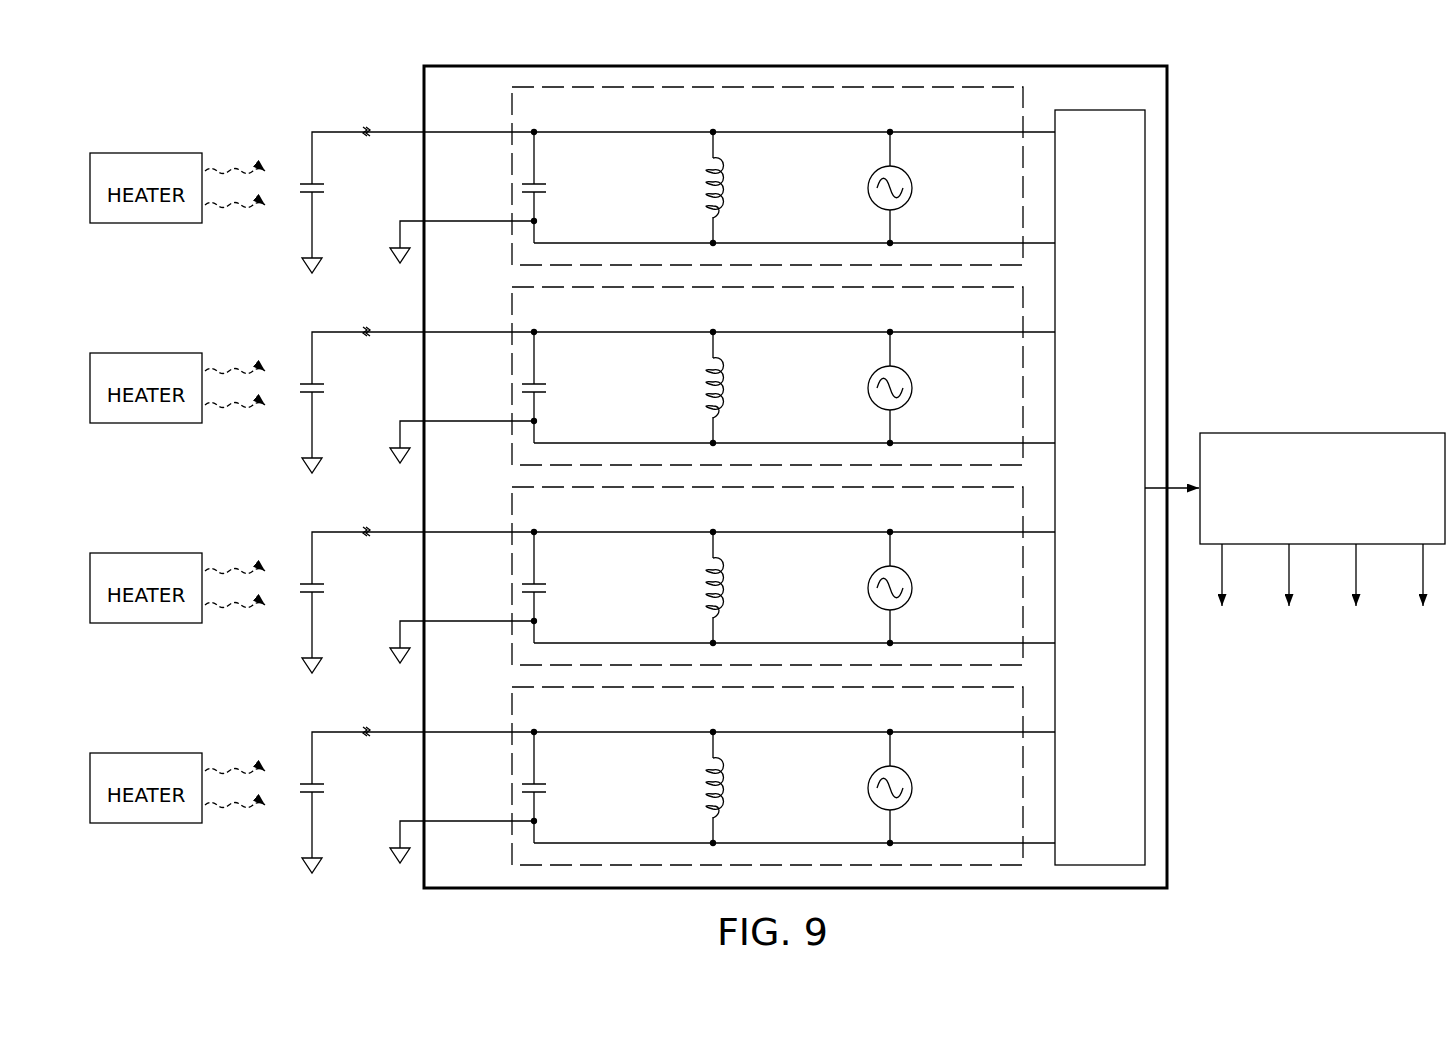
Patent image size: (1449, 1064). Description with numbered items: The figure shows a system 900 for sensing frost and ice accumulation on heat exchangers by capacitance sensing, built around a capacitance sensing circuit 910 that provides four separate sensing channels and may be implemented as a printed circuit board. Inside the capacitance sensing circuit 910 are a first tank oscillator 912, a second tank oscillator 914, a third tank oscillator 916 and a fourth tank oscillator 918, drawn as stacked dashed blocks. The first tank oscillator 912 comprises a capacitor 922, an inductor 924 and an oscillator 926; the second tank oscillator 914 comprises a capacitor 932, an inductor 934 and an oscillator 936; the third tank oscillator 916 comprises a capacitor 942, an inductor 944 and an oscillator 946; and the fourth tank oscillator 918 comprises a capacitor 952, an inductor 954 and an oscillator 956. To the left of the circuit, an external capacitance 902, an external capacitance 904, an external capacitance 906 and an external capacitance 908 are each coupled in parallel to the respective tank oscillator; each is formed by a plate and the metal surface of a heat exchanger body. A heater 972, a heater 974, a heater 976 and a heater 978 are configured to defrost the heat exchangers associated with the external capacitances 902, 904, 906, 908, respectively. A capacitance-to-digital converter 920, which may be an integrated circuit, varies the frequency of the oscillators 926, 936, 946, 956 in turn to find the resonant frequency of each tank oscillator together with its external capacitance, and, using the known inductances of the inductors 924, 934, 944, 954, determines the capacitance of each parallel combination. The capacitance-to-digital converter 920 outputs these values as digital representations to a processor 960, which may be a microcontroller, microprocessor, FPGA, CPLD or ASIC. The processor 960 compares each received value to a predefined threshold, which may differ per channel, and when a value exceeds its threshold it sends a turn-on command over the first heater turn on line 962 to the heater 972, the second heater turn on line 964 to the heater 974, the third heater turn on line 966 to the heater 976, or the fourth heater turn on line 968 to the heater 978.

The system 900 is at (1371, 128).
The external capacitance 902 is at (324, 191).
The external capacitance 904 is at (677, 400).
The external capacitance 906 is at (677, 600).
The external capacitance 908 is at (677, 800).
The capacitance sensing circuit 910 is at (1172, 239).
The first tank oscillator 912 is at (508, 117).
The second tank oscillator 914 is at (727, 373).
The third tank oscillator 916 is at (727, 573).
The fourth tank oscillator 918 is at (727, 773).
The capacitance-to-digital converter (CDC) 920 is at (1083, 520).
The capacitor 922 is at (547, 191).
The inductor 924 is at (702, 188).
The oscillator 926 is at (913, 185).
The capacitor 932 is at (573, 387).
The inductor 934 is at (676, 387).
The oscillator 936 is at (929, 387).
The capacitor 942 is at (573, 587).
The inductor 944 is at (676, 587).
The oscillator 946 is at (929, 587).
The capacitor 952 is at (573, 787).
The inductor 954 is at (676, 787).
The oscillator 956 is at (929, 787).
The processor 960 is at (1302, 520).
The first heater turn on line 962 is at (1231, 612).
The second heater turn on line 964 is at (1298, 612).
The third heater turn on line 966 is at (1365, 612).
The fourth heater turn on line 968 is at (1432, 612).
The heater 972 is at (143, 152).
The heater 974 is at (177, 359).
The heater 976 is at (177, 617).
The heater 978 is at (177, 817).